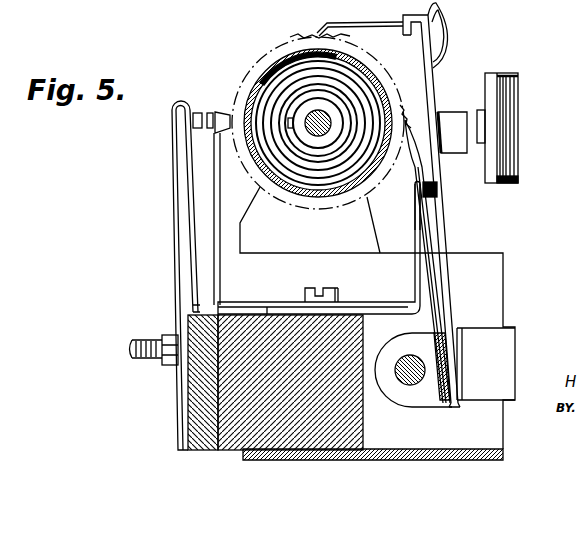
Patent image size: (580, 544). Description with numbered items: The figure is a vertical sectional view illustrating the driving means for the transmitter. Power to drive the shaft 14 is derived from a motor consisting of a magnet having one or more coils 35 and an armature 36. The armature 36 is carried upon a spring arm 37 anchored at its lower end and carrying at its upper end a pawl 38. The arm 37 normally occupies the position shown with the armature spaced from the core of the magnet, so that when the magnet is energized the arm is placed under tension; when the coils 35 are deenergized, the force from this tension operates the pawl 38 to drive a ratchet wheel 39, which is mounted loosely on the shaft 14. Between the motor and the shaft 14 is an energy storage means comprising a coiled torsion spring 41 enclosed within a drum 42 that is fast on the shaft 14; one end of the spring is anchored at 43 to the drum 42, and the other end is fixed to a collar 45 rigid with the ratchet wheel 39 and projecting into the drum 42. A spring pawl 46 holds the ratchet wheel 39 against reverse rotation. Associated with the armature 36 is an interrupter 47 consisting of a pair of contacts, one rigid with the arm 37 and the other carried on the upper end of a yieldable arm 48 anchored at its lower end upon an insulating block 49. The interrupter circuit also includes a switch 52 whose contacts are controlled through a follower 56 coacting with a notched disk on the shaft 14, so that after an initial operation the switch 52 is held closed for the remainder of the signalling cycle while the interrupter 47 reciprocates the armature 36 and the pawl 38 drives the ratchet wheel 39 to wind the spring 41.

The shaft 14 is at (318, 127).
The coil 35 is at (513, 104).
The armature 36 is at (458, 145).
The spring arm 37 is at (433, 88).
The pawl 38 is at (378, 22).
The ratchet wheel 39 is at (262, 58).
The coiled torsion spring 41 is at (331, 160).
The drum 42 is at (256, 82).
The anchor point 43 is at (356, 56).
The collar 45 is at (305, 137).
The spring pawl 46 is at (432, 233).
The interrupter 47 is at (413, 183).
The yieldable arm 48 is at (417, 234).
The insulating block 49 is at (365, 428).
The switch 52 is at (206, 112).
The follower 56 is at (213, 184).